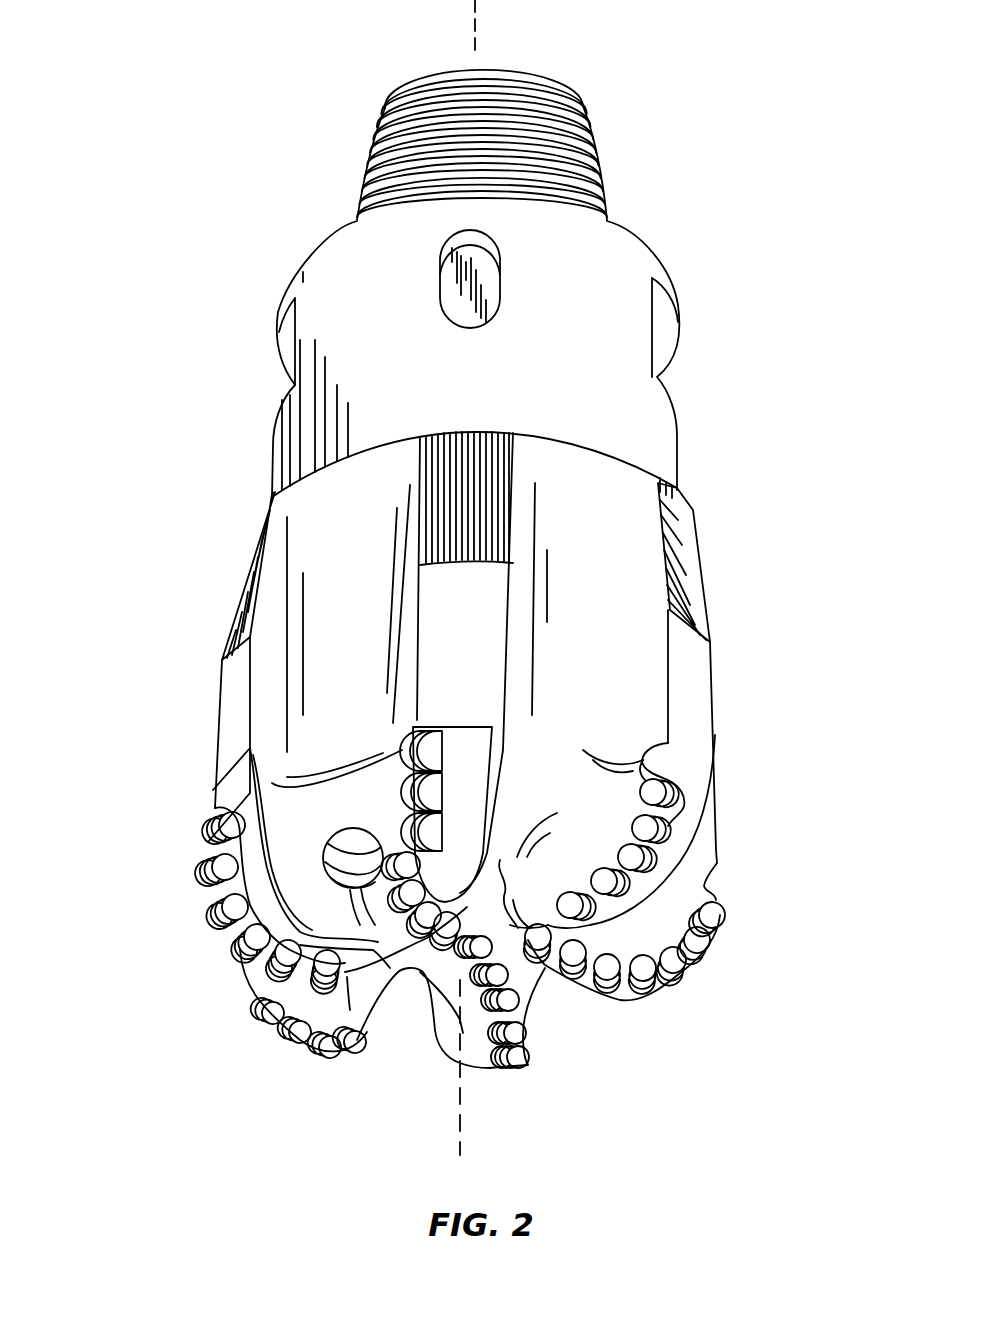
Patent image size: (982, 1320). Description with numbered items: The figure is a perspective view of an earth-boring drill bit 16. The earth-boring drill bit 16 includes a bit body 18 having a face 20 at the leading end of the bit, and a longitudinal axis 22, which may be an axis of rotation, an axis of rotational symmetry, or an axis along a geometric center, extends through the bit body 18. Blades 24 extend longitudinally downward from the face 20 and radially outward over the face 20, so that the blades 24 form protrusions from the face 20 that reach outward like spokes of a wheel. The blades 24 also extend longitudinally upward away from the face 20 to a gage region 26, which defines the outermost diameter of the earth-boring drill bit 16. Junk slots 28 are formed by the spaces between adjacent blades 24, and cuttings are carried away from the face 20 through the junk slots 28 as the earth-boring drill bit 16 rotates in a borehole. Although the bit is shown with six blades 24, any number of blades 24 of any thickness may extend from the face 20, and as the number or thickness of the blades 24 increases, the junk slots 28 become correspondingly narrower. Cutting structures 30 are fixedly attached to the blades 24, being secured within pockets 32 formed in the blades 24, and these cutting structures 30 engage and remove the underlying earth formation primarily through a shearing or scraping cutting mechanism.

The earth-boring drill bit 16 is at (148, 172).
The bit body 18 is at (300, 571).
The face 20 is at (438, 1075).
The longitudinal axis 22 is at (477, 30).
The blades 24 is at (292, 998).
The gage region 26 is at (234, 711).
The junk slots 28 is at (340, 658).
The cutting structures 30 is at (226, 907).
The pockets 32 is at (215, 808).